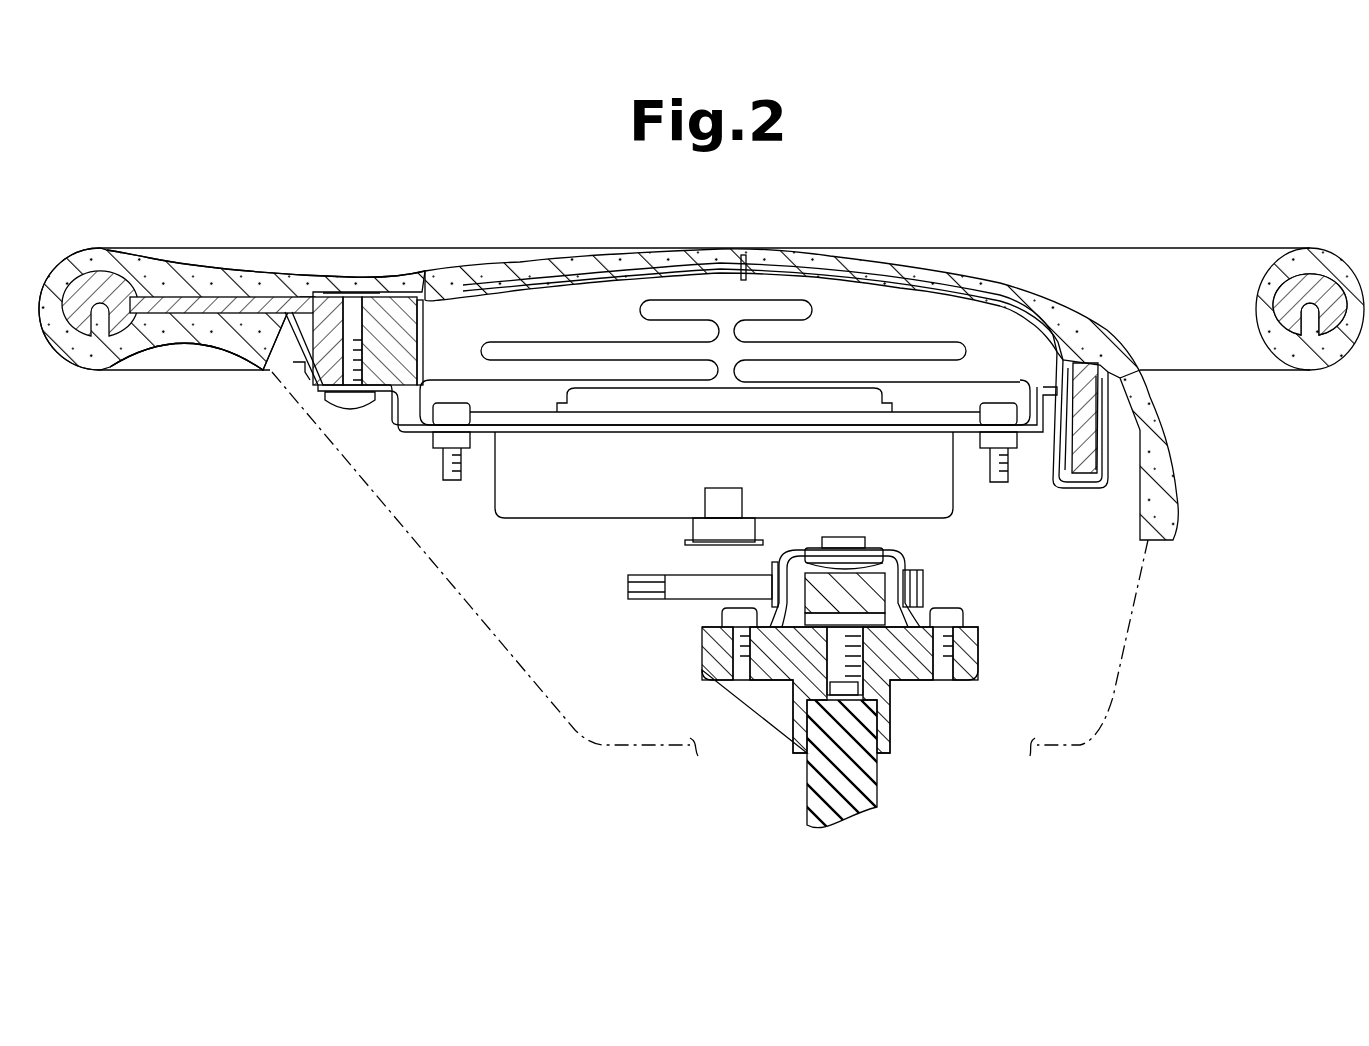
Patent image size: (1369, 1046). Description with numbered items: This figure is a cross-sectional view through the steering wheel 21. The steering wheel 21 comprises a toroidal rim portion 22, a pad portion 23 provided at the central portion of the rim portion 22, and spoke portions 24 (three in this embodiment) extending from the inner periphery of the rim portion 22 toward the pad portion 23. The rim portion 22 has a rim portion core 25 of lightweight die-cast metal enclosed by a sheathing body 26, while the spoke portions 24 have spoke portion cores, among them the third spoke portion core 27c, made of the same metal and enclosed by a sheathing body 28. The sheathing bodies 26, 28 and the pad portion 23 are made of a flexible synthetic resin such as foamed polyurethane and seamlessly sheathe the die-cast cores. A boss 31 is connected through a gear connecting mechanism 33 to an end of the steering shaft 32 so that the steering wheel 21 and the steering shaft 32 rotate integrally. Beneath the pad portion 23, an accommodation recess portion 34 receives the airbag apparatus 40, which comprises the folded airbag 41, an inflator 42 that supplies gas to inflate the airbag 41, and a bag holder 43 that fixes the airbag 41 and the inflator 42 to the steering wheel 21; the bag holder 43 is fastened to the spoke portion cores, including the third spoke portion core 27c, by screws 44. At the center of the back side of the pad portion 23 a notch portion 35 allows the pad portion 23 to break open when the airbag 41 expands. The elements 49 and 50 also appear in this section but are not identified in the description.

The steering wheel 21 is at (947, 232).
The toroidal rim portion 22 is at (93, 247).
The pad portion 23 is at (680, 252).
The spoke portions 24 is at (183, 340).
The rim portion core 25 is at (88, 318).
The sheathing body 26 is at (48, 272).
The third spoke portion core 27c is at (243, 330).
The sheathing body 28 is at (262, 272).
The boss 31 is at (777, 694).
The steering shaft 32 is at (880, 803).
The gear connecting mechanism 33 is at (870, 588).
The accommodation recess portion 34 is at (725, 341).
The notch portion 35 is at (744, 256).
The airbag apparatus 40 is at (520, 523).
The airbag 41 is at (500, 340).
The inflator 42 is at (560, 403).
The bag holder 43 is at (412, 432).
The screws 44 is at (350, 412).
The inflator flange 49 is at (922, 420).
The fixing bolt 50 is at (452, 403).